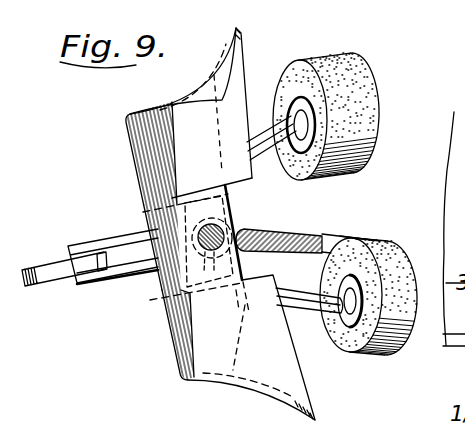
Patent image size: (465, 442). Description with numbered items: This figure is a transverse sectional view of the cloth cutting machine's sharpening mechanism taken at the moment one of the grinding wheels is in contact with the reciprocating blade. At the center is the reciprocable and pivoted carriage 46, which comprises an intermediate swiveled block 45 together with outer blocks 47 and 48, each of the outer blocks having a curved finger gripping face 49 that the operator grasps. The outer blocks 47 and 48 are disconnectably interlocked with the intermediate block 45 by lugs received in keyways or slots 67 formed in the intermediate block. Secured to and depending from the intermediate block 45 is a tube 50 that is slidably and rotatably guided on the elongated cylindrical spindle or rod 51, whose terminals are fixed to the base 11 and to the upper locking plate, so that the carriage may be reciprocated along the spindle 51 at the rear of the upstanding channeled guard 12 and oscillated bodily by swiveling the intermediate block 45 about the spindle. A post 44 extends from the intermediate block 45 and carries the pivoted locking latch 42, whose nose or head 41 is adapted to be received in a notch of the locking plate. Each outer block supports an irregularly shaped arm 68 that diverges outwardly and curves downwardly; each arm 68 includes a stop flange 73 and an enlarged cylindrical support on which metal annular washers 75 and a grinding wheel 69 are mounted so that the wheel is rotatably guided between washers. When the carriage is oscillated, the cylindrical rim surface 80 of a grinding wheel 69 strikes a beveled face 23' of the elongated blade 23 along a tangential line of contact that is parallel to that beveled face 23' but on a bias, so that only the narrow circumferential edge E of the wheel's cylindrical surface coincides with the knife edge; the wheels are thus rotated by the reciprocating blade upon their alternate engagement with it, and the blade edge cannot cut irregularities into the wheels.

The outer block 47 is at (133, 140).
The intermediate swiveled block 45 is at (226, 206).
The carriage 46 is at (162, 331).
The outer block 48 is at (186, 350).
The curved finger gripping face 49 is at (257, 384).
The tube 50 is at (237, 264).
The keyway or slot 67 is at (150, 211).
The irregularly shaped arm 68 is at (150, 194).
The grinding wheel 69 is at (372, 115).
The cylindrical rim surface 80 is at (400, 275).
The circumferential edge E is at (355, 204).
The metal annular washer 75 is at (340, 323).
The stop flange 73 is at (322, 290).
The spindle or rod 51 is at (247, 231).
The upstanding channeled guard 12 is at (304, 236).
The elongated blade 23 is at (356, 221).
The beveled face 23' is at (389, 218).
The post 44 is at (115, 278).
The locking latch 42 is at (62, 270).
The nose or head 41 is at (88, 262).
The base 11 is at (432, 37).